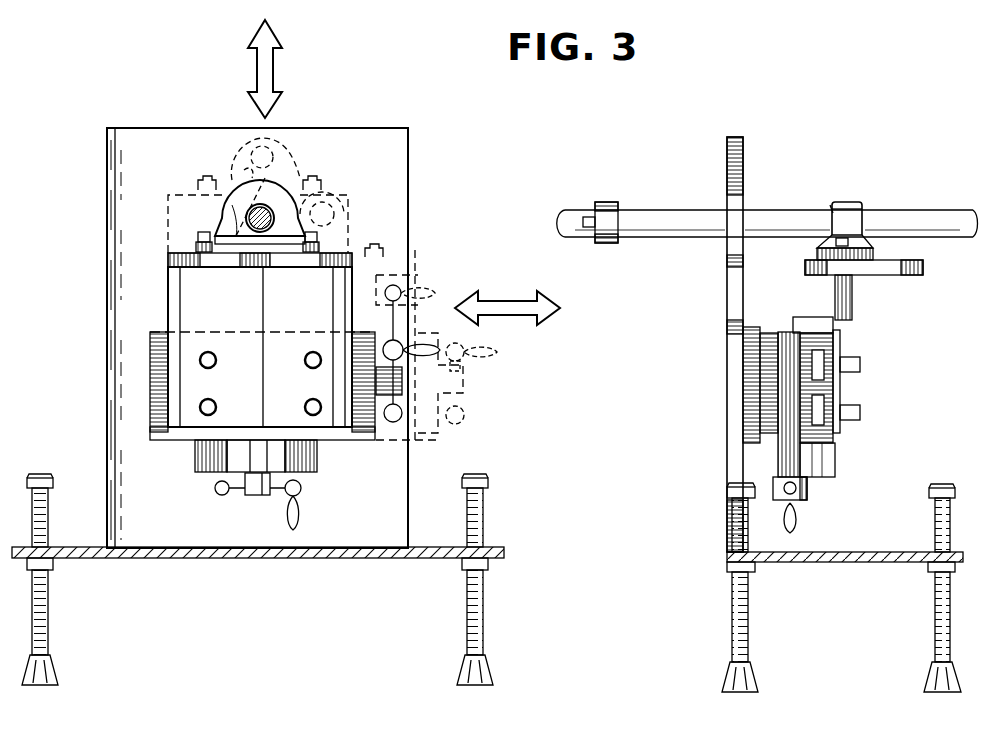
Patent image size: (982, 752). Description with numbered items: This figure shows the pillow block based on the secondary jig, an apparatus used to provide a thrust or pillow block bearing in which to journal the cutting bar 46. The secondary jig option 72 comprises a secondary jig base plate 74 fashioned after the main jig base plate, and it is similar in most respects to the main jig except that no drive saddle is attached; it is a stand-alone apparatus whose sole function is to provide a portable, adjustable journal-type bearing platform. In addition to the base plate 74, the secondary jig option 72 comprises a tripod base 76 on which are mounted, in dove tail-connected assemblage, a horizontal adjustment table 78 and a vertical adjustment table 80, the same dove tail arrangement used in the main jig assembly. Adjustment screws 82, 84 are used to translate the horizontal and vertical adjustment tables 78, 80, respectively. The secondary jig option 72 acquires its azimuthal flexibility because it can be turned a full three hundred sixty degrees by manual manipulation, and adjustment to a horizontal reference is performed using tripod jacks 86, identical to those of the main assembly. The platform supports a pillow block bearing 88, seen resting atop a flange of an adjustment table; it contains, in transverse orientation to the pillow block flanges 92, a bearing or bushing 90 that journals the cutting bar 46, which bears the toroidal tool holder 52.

The cutting bar 46 is at (932, 222).
The toroidal tool holder 52 is at (605, 202).
The secondary jig option 72 is at (170, 128).
The secondary jig base plate 74 is at (143, 167).
The tripod base 76 is at (415, 558).
The horizontal adjustment table 78 is at (361, 440).
The vertical adjustment table 80 is at (247, 450).
The adjustment screw 82 is at (392, 423).
The adjustment screw 84 is at (256, 496).
The tripod jacks 86 is at (48, 623).
The pillow block bearing 88 is at (247, 262).
The bearing or bushing 90 is at (280, 140).
The pillow block flanges 92 is at (297, 172).